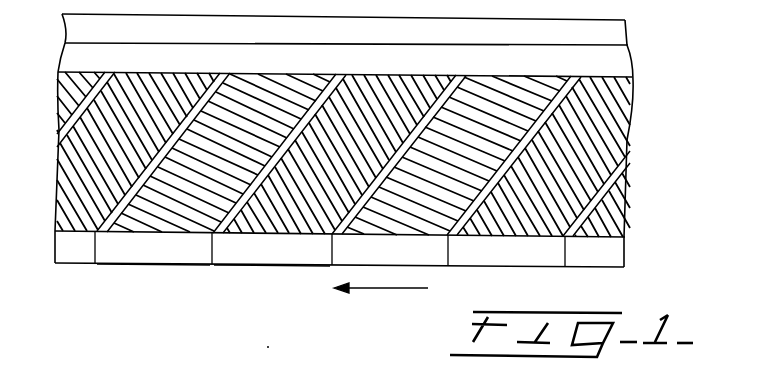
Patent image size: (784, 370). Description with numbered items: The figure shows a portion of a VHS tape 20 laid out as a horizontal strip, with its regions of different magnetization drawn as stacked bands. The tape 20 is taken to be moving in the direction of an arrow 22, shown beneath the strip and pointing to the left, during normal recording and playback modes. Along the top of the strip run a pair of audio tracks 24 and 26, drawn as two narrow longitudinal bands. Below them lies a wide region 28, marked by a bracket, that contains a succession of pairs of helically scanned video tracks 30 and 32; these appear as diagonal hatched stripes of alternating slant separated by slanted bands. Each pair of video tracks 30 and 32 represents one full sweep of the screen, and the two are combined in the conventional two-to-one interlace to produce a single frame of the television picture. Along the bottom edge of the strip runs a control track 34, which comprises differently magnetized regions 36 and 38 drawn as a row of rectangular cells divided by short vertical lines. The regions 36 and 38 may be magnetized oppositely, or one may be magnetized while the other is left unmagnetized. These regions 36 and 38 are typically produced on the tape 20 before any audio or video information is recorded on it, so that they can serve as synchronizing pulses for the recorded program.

The tape 20 is at (594, 18).
The arrow 22 is at (403, 290).
The audio track 24 is at (628, 36).
The audio track 26 is at (633, 66).
The region 28 is at (643, 82).
The video track 30 is at (136, 223).
The video track 32 is at (262, 220).
The control track 34 is at (627, 253).
The magnetized region 36 is at (168, 266).
The magnetized region 38 is at (297, 268).